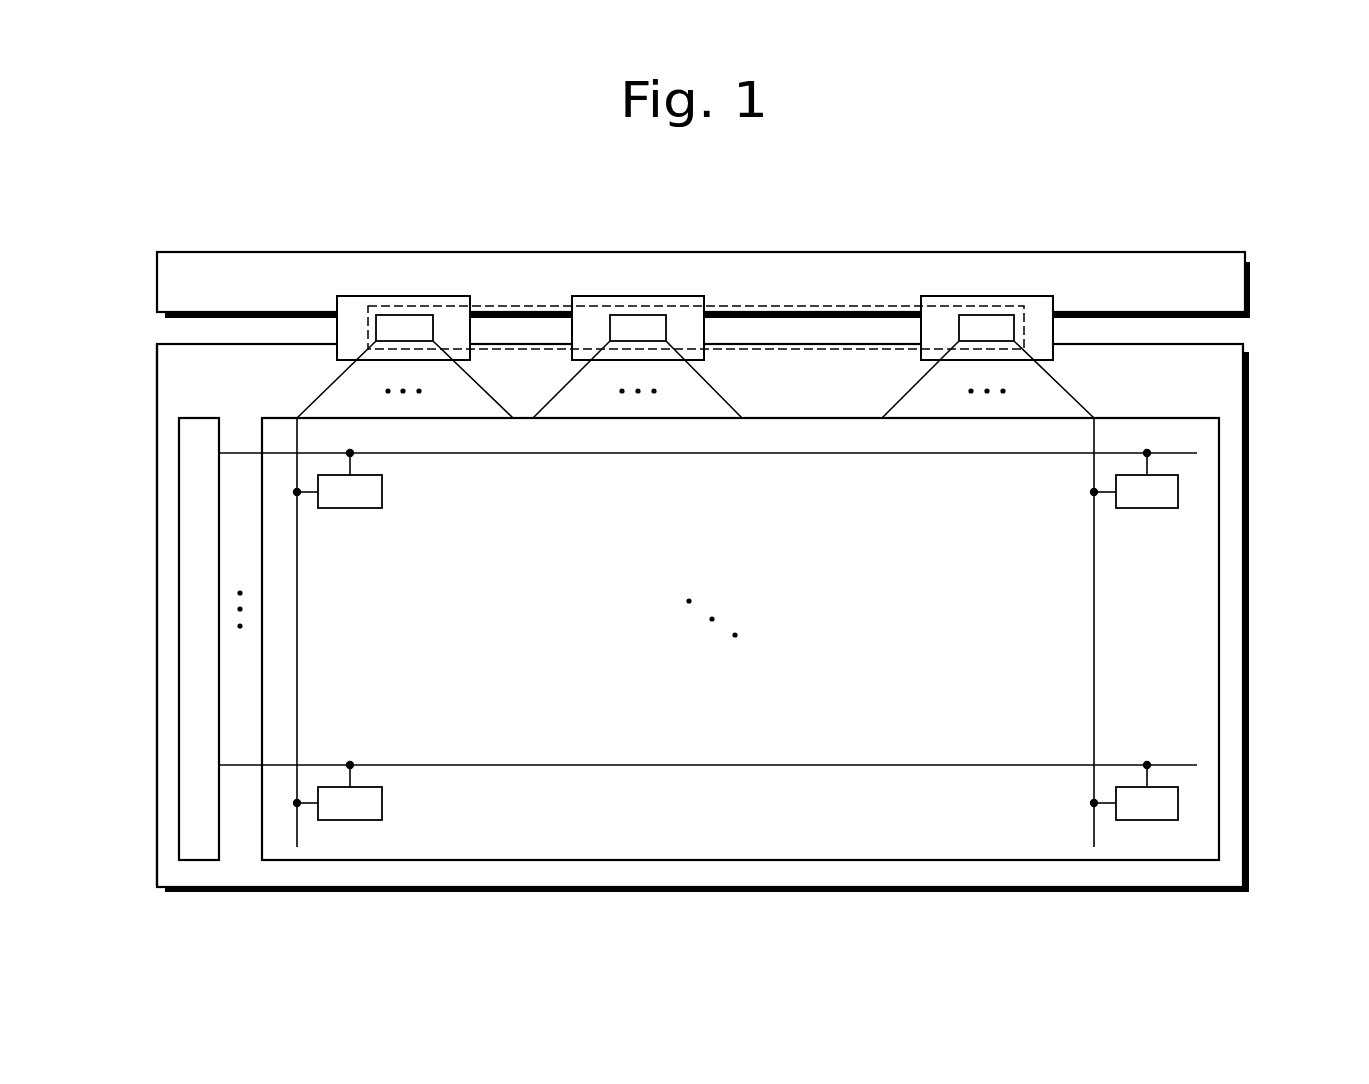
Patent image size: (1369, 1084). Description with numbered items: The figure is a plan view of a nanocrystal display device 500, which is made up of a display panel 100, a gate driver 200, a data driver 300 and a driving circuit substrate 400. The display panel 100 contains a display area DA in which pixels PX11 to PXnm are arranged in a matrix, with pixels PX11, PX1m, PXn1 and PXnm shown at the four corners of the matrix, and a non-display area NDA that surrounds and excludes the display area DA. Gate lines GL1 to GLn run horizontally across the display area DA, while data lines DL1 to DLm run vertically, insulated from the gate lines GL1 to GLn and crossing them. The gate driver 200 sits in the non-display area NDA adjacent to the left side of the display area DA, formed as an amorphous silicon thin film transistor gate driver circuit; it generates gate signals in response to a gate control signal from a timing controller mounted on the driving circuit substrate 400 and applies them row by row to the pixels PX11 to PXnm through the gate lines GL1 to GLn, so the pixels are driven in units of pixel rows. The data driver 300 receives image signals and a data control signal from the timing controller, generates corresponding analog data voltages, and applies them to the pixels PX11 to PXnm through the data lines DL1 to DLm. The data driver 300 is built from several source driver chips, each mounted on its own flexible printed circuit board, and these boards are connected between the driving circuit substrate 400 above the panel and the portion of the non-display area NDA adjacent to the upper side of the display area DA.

The nanocrystal display device 500 is at (1173, 190).
The driving circuit substrate 400 is at (1250, 284).
The data driver 300 is at (800, 306).
The display panel 100 is at (1249, 605).
The gate driver 200 is at (178, 633).
The non-display area NDA is at (168, 497).
The display area DA is at (1219, 683).
The gate line GL1 is at (539, 454).
The gate line GLn is at (554, 764).
The data line DL1 is at (297, 633).
The data line DLm is at (1094, 637).
The pixel PX11 is at (338, 479).
The pixel PX1m is at (1135, 479).
The pixel PXn1 is at (338, 791).
The pixel PXnm is at (1135, 791).